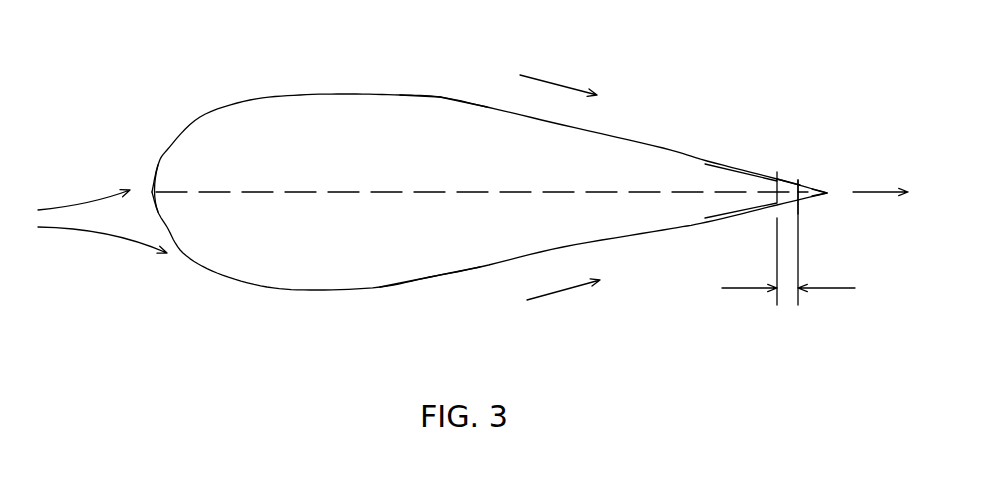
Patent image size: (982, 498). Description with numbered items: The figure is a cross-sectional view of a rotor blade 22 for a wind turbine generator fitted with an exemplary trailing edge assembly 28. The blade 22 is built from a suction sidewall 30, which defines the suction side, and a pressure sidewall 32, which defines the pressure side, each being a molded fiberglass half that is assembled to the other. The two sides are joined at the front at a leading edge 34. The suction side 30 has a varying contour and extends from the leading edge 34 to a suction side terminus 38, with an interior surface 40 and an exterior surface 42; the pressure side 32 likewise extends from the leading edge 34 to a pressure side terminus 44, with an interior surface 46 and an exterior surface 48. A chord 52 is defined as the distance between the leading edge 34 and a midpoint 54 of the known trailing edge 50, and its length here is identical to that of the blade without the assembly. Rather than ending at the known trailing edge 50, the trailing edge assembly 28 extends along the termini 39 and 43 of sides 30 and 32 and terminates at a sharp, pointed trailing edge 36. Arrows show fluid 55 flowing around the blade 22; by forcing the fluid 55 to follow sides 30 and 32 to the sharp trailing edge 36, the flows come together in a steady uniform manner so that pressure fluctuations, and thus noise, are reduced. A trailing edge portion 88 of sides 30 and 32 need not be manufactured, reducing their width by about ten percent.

The rotor blade 22 is at (256, 51).
The trailing edge assembly 28 is at (792, 181).
The suction sidewall 30 is at (382, 95).
The pressure sidewall 32 is at (275, 288).
The leading edge 34 is at (153, 192).
The sharp trailing edge 36 is at (827, 193).
The suction side terminus 38 is at (798, 188).
The terminus of suction side 39 is at (777, 172).
The interior surface 40 is at (485, 108).
The exterior surface 42 is at (440, 98).
The terminus of pressure side 43 is at (773, 207).
The pressure side terminus 44 is at (798, 222).
The interior surface 46 is at (480, 267).
The exterior surface 48 is at (417, 283).
The known trailing edge 50 is at (798, 202).
The chord 52 is at (308, 192).
The midpoint 54 is at (802, 195).
The fluid 55 is at (473, 187).
The trailing edge portion 88 is at (801, 288).